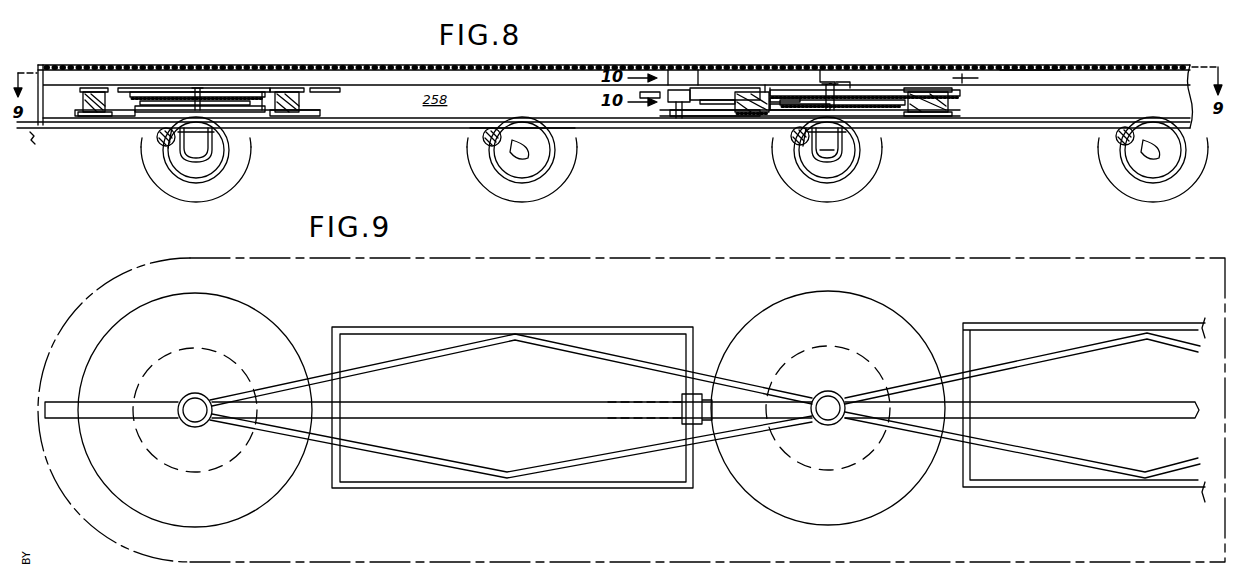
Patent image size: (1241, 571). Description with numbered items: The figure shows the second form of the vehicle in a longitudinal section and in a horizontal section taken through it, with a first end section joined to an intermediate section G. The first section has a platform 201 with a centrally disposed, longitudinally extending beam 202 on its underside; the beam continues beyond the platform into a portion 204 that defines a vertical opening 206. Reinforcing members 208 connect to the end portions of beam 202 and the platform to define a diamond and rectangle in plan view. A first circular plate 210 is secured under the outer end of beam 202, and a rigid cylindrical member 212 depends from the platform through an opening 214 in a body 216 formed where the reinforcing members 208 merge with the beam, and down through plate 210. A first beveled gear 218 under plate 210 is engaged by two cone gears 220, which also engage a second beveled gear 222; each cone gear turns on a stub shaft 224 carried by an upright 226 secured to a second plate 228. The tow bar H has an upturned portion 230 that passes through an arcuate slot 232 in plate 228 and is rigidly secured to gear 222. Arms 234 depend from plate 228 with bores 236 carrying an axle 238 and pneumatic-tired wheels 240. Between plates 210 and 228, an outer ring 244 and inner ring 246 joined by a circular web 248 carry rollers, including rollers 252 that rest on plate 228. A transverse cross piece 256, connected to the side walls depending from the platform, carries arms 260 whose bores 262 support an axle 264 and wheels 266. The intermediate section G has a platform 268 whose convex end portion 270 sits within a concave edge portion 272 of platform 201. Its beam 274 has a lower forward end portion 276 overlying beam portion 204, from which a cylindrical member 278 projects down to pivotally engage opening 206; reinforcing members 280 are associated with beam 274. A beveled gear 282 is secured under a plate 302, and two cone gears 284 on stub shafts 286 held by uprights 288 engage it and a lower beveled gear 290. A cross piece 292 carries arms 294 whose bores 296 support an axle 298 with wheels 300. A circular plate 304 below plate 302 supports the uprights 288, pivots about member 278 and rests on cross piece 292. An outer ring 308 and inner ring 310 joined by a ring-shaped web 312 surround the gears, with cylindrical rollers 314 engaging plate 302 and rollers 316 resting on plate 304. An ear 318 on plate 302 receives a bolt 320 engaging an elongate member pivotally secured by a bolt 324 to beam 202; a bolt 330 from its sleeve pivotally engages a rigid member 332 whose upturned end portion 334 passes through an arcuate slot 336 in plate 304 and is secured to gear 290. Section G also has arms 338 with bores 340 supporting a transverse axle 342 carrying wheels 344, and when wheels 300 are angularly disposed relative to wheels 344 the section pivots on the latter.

In FIG. 8, the platform 201 is at (542, 66).
In FIG. 8, the beam 202 is at (318, 70).
In FIG. 9, the beam 202 is at (466, 402).
In FIG. 8, the beam portion 204 is at (826, 72).
In FIG. 8, the vertical opening 206 is at (842, 84).
In FIG. 9, the reinforcing members 208 is at (592, 327).
In FIG. 8, the first circular plate 210 is at (338, 91).
In FIG. 9, the first circular plate 210 is at (270, 318).
In FIG. 8, the rigid cylindrical member 212 is at (214, 140).
In FIG. 9, the opening 214 is at (196, 420).
In FIG. 9, the body 216 is at (214, 392).
In FIG. 8, the first beveled gear 218 is at (168, 90).
In FIG. 8, the cone gears 220 is at (202, 90).
In FIG. 8, the second beveled gear 222 is at (266, 88).
In FIG. 8, the stub shaft 224 is at (212, 94).
In FIG. 8, the upright 226 is at (165, 114).
In FIG. 8, the second plate 228 is at (338, 111).
In FIG. 8, the upturned portion 230 is at (130, 114).
In FIG. 8, the arcuate slot 232 is at (134, 94).
In FIG. 8, the arms 234 is at (170, 146).
In FIG. 8, the bores 236 is at (190, 156).
In FIG. 8, the axle 238 is at (166, 146).
In FIG. 8, the pneumatic-tired wheels 240 is at (248, 176).
In FIG. 8, the outer ring 244 is at (90, 112).
In FIG. 8, the inner ring 246 is at (96, 113).
In FIG. 8, the circular web 248 is at (84, 116).
In FIG. 8, the rollers 252 is at (98, 88).
In FIG. 8, the transverse cross piece 256 is at (495, 128).
In FIG. 8, the arms 260 is at (480, 134).
In FIG. 8, the bores 262 is at (515, 142).
In FIG. 8, the axle 264 is at (536, 140).
In FIG. 8, the pneumatic-tired wheels 266 is at (574, 160).
In FIG. 8, the platform 268 is at (1020, 66).
In FIG. 8, the convex end portion 270 is at (699, 70).
In FIG. 8, the concave edge portion 272 is at (669, 68).
In FIG. 9, the concave edge portion 272 is at (722, 302).
In FIG. 8, the beam 274 is at (980, 75).
In FIG. 9, the beam 274 is at (1028, 402).
In FIG. 8, the forward end portion 276 is at (840, 98).
In FIG. 8, the rigid elongate cylindrical member 278 is at (840, 148).
In FIG. 9, the reinforcing members 280 is at (1018, 364).
In FIG. 8, the beveled gear 282 is at (850, 96).
In FIG. 8, the cone gears 284 is at (865, 70).
In FIG. 8, the stub shafts 286 is at (800, 112).
In FIG. 8, the uprights 288 is at (846, 130).
In FIG. 8, the beveled gear 290 is at (932, 100).
In FIG. 8, the cross piece 292 is at (842, 136).
In FIG. 8, the arms 294 is at (805, 146).
In FIG. 8, the bores 296 is at (824, 155).
In FIG. 8, the axle 298 is at (796, 145).
In FIG. 8, the pneumatic-tired wheels 300 is at (882, 172).
In FIG. 8, the plate 302 is at (766, 85).
In FIG. 8, the circular plate 304 is at (954, 117).
In FIG. 8, the outer ring 308 is at (700, 117).
In FIG. 8, the inner ring 310 is at (758, 116).
In FIG. 8, the ring-shaped web 312 is at (745, 113).
In FIG. 8, the cylindrical rollers 314 is at (740, 90).
In FIG. 8, the rollers 316 is at (950, 100).
In FIG. 8, the ear 318 is at (702, 90).
In FIG. 8, the bolt 320 is at (690, 112).
In FIG. 8, the bolt 324 is at (640, 96).
In FIG. 9, the bolt 324 is at (606, 416).
In FIG. 8, the bolt 330 is at (674, 103).
In FIG. 8, the rigid member 332 is at (680, 112).
In FIG. 8, the upturned end portion 334 is at (782, 104).
In FIG. 8, the arcuate slot 336 is at (774, 88).
In FIG. 8, the arms 338 is at (1118, 142).
In FIG. 8, the bores 340 is at (1148, 145).
In FIG. 8, the transverse axle 342 is at (1157, 152).
In FIG. 8, the pneumatic-tired wheels 344 is at (1170, 200).
In FIG. 8, the intermediate section G is at (1114, 64).
In FIG. 8, the tow bar H is at (26, 147).